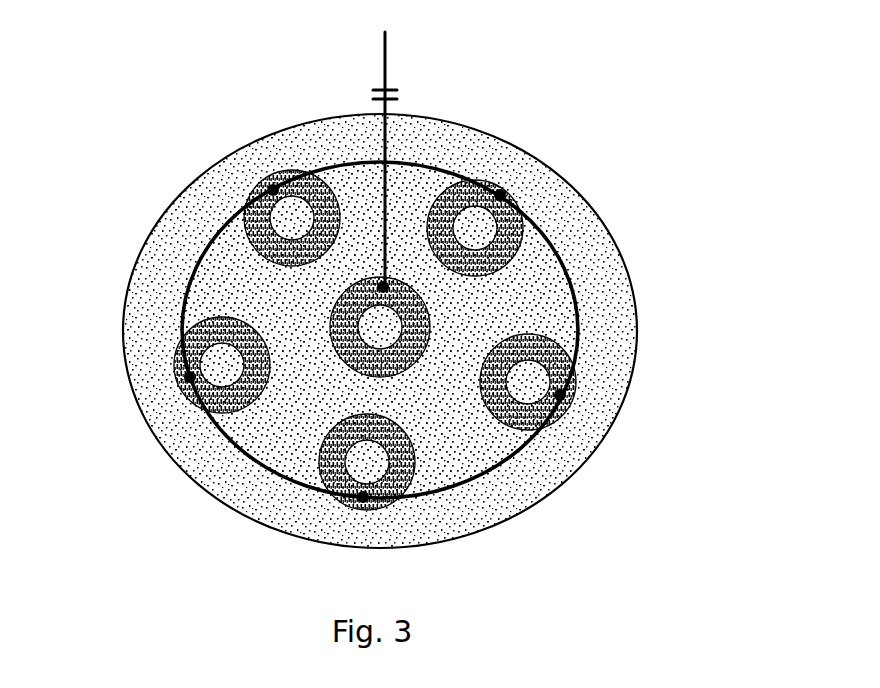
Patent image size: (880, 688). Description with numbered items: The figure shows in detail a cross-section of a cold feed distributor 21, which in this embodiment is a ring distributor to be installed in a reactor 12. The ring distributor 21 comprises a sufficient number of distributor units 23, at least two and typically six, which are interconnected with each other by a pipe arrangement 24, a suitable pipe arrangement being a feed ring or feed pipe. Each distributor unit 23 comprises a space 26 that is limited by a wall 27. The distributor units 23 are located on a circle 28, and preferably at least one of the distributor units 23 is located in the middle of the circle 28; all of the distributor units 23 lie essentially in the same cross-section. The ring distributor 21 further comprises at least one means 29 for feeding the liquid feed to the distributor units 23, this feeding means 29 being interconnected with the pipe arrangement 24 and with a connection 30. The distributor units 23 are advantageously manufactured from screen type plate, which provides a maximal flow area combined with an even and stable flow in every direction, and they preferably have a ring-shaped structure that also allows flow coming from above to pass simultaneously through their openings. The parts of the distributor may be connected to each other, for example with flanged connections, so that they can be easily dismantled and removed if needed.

The reactor 12 is at (574, 183).
The cold feed distributor 21 is at (580, 310).
The distributor unit 23 is at (560, 350).
The pipe arrangement 24 is at (442, 165).
The space 26 is at (253, 223).
The wall 27 is at (266, 174).
The circle 28 is at (187, 285).
The means for feeding the liquid feed 29 is at (387, 60).
The connection 30 is at (373, 97).